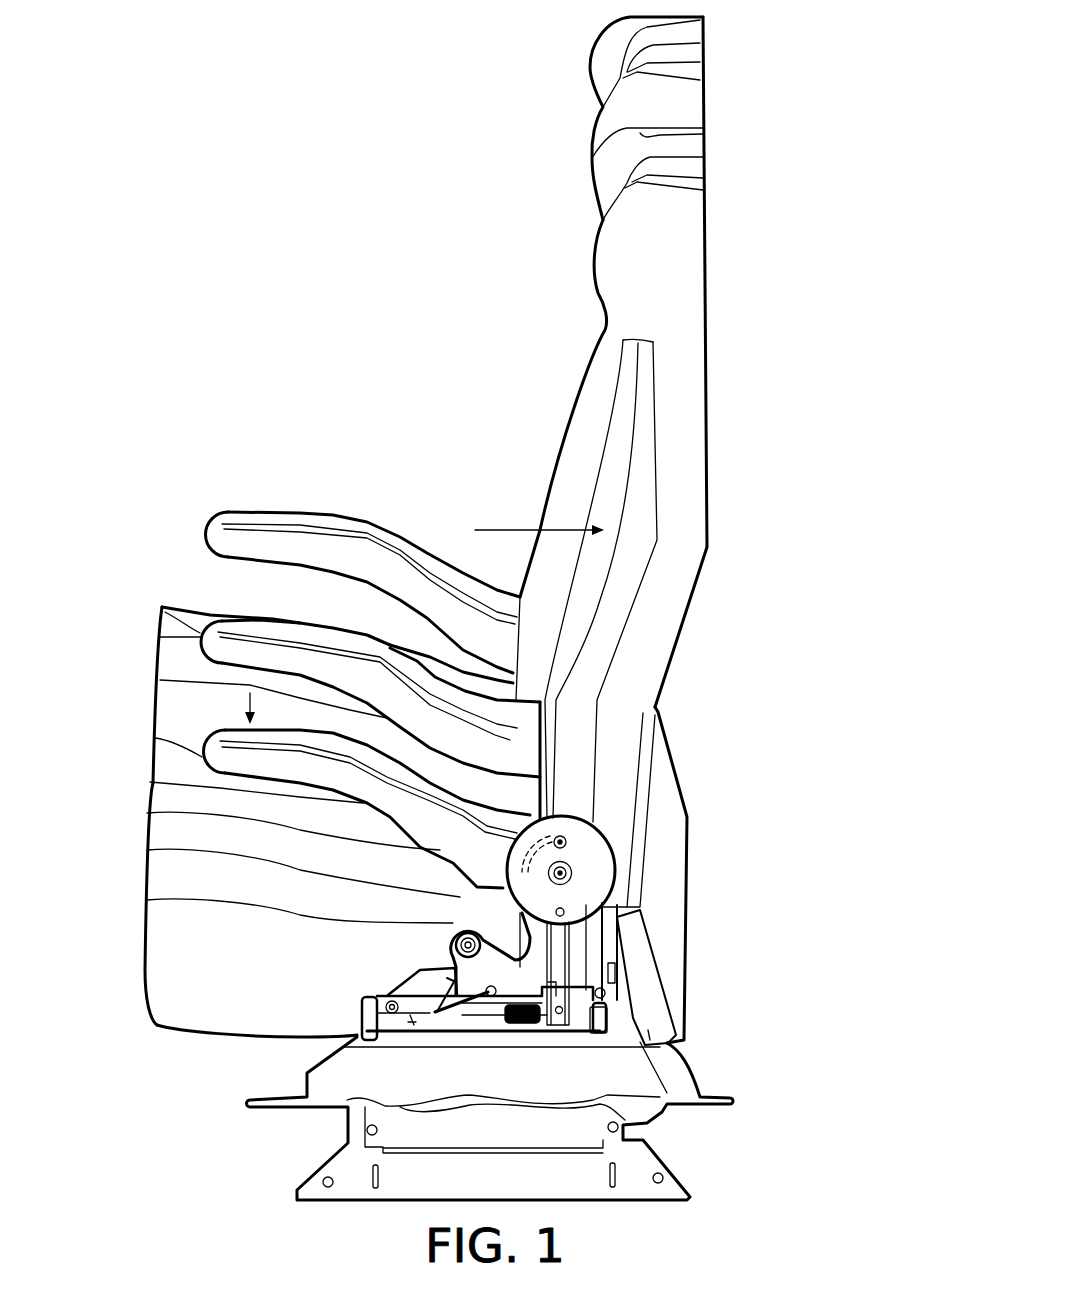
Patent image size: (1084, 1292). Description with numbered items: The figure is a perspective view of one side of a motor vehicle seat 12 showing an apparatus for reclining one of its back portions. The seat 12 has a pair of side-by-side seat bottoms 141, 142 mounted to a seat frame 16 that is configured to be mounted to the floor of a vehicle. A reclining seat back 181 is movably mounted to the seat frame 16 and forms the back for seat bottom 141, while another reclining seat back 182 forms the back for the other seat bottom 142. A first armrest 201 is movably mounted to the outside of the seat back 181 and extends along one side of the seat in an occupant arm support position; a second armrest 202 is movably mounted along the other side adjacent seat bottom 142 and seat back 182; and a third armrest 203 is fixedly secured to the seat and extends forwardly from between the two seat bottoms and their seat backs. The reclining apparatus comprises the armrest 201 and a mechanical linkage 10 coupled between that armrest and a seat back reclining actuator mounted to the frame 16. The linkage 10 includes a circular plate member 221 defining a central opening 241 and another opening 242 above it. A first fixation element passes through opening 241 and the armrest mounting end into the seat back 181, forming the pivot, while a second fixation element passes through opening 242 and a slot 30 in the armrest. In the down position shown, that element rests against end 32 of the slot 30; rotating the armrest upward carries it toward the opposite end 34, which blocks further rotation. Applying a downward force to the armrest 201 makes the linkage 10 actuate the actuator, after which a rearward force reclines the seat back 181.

The mechanical linkage 10 is at (648, 955).
The motor vehicle seat 12 is at (712, 626).
The seat bottom 141 is at (146, 963).
The seat bottom 142 is at (155, 655).
The seat frame 16 is at (347, 1037).
The reclining seat back 181 is at (707, 327).
The reclining seat back 182 is at (707, 53).
The first armrest 201 is at (155, 738).
The second armrest 202 is at (205, 535).
The third armrest 203 is at (160, 608).
The plate member 221 is at (615, 890).
The opening 241 is at (553, 873).
The opening 242 is at (617, 871).
The slot 30 is at (547, 837).
The slot end 32 is at (566, 842).
The slot end 34 is at (520, 870).